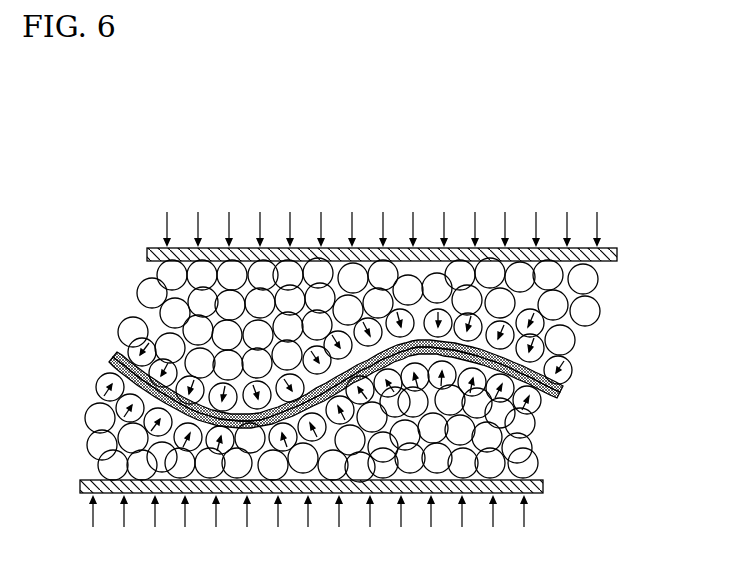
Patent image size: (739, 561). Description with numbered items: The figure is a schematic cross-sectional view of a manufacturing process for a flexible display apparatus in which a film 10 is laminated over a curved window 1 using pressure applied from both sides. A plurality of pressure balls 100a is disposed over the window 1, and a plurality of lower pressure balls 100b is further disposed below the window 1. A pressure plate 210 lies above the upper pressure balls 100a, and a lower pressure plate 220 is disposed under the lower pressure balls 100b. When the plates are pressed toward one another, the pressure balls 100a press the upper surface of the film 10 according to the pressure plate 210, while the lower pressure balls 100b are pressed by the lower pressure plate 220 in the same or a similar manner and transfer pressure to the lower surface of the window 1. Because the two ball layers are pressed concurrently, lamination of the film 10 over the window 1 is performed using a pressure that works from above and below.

The window 1 is at (553, 404).
The film 10 is at (566, 391).
The pressure balls 100a is at (567, 368).
The lower pressure balls 100b is at (533, 462).
The pressure plate 210 is at (620, 253).
The lower pressure plate 220 is at (545, 487).